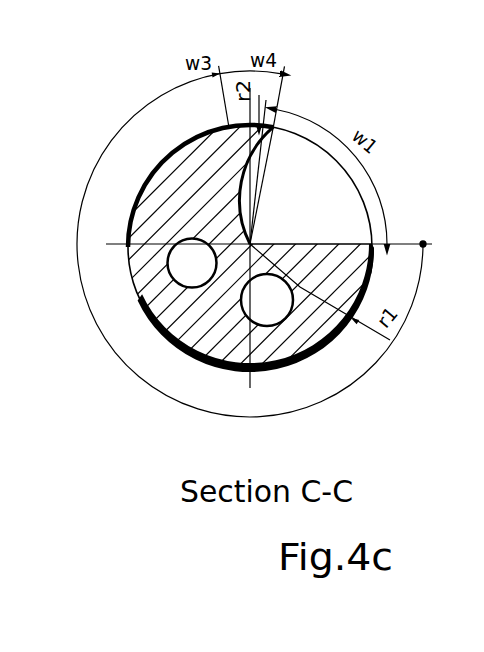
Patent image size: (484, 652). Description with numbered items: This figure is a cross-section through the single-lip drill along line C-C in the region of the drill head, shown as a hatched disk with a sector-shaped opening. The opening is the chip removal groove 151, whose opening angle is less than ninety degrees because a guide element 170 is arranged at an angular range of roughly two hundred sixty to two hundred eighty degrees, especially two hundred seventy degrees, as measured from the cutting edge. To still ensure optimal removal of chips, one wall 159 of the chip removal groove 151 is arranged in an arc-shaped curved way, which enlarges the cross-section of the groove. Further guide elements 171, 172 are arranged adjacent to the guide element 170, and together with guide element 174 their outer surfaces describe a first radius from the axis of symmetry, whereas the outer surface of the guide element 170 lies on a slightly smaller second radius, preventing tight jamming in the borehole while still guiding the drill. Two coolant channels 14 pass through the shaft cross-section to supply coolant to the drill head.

The coolant channel 14 is at (266, 301).
The chip removal groove 151 is at (319, 231).
The wall 159 is at (238, 200).
The guide element 170 is at (273, 124).
The guide element 171 is at (378, 260).
The guide element 172 is at (313, 356).
The guide element 174 is at (483, 233).